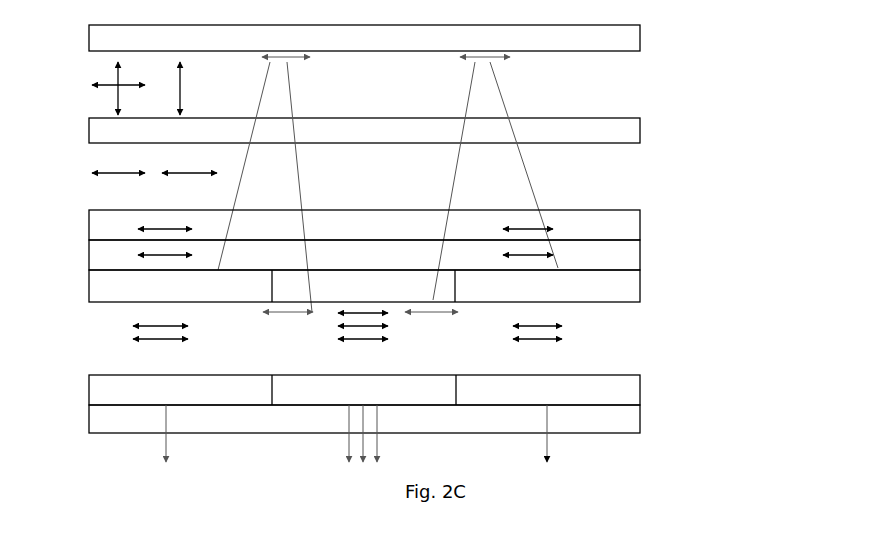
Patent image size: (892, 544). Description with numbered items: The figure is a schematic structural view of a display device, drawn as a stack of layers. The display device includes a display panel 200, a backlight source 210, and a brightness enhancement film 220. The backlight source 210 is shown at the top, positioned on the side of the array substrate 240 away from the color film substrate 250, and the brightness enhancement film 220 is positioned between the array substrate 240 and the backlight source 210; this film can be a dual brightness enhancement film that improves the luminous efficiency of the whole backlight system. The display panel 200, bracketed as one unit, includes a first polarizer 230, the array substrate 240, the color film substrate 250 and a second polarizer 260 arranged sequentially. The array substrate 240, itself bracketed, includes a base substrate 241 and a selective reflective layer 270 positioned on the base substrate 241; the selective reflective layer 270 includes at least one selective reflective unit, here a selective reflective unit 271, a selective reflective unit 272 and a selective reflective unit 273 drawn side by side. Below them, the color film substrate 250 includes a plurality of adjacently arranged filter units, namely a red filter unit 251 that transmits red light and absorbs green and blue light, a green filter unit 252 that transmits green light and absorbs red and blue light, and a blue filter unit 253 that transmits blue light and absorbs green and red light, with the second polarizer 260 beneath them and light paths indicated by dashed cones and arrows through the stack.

The display panel 200 is at (736, 190).
The backlight source 210 is at (630, 39).
The brightness enhancement film 220 is at (630, 131).
The first polarizer 230 is at (630, 226).
The array substrate 240 is at (83, 240).
The base substrate 241 is at (630, 260).
The color film substrate 250 is at (630, 392).
The red filter unit 251 is at (180, 387).
The green filter unit 252 is at (365, 387).
The blue filter unit 253 is at (547, 387).
The second polarizer 260 is at (630, 420).
The selective reflective layer 270 is at (630, 291).
The selective reflective unit 271 is at (168, 304).
The selective reflective unit 272 is at (366, 304).
The selective reflective unit 273 is at (538, 304).